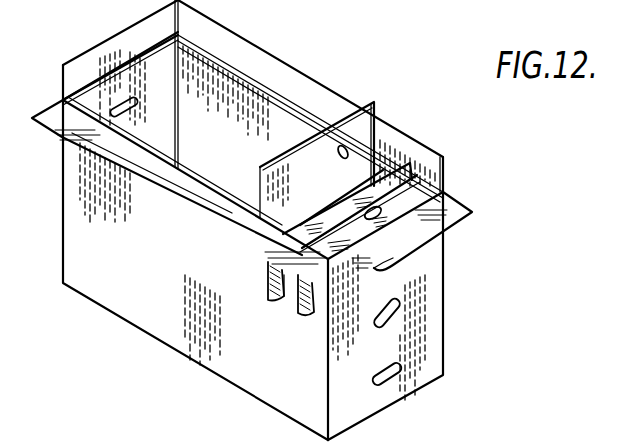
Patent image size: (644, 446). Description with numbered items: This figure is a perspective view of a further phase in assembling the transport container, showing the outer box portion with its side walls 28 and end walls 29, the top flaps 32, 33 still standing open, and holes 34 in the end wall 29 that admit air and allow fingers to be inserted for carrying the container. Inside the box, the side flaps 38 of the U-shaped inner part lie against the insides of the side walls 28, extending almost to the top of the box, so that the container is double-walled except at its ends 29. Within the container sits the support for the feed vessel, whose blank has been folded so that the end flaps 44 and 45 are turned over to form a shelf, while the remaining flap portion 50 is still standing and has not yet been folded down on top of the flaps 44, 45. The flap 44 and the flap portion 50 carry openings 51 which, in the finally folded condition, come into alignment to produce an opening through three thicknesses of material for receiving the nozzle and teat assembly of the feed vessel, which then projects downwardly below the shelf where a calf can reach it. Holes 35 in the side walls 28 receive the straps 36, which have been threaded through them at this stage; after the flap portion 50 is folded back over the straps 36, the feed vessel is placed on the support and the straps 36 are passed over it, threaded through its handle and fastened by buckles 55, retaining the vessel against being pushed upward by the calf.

The side wall 28 is at (140, 313).
The end wall 29 is at (375, 405).
The top flap 32 is at (295, 80).
The top flap 33 is at (123, 43).
The hole 34 is at (400, 363).
The hole 35 is at (300, 316).
The strap 36 is at (268, 283).
The side flap 38 is at (228, 83).
The end flap 44 is at (296, 244).
The end flap 45 is at (437, 183).
The flap portion 50 is at (378, 113).
The opening 51 is at (340, 157).
The buckle 55 is at (282, 295).